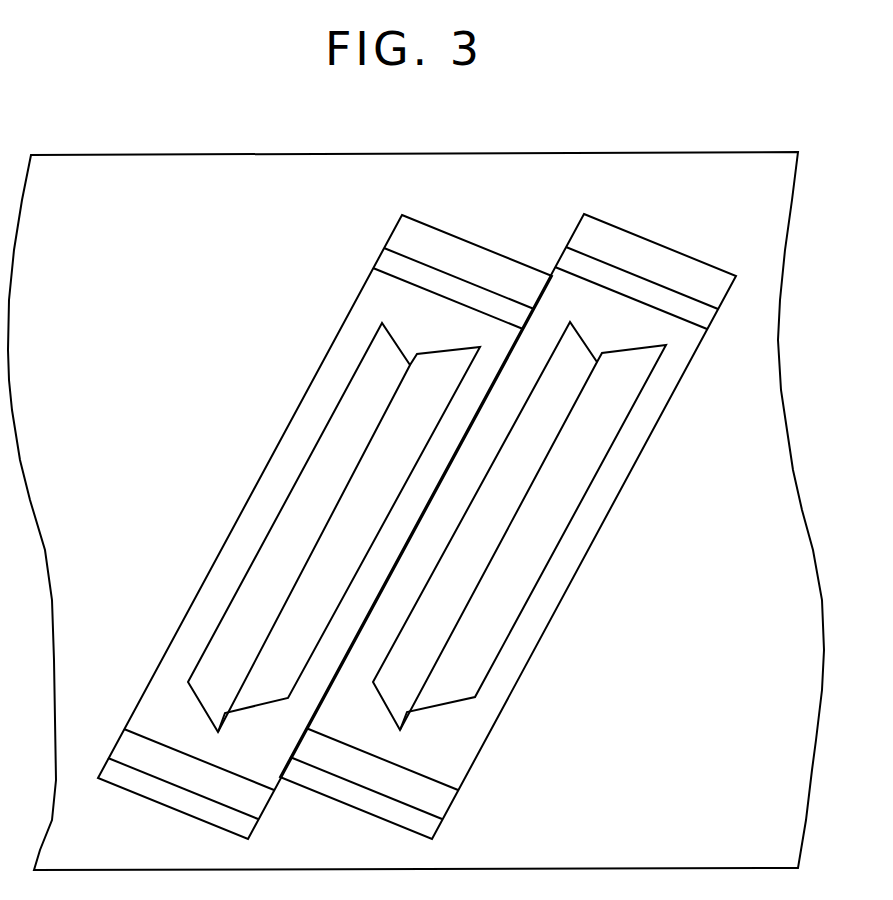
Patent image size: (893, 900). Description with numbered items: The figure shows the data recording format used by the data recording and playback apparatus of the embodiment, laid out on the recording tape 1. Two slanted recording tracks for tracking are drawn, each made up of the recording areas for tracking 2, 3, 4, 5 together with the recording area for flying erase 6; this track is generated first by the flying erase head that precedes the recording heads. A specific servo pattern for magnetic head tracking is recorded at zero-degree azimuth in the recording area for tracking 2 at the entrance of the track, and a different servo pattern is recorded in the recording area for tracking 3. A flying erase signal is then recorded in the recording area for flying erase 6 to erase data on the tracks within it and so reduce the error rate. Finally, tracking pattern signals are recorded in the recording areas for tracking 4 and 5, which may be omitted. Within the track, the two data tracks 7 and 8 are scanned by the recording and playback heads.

The recording tape 1 is at (162, 163).
The recording area for tracking 2 is at (112, 777).
The recording area for tracking 3 is at (130, 748).
The recording area for tracking 4 is at (388, 265).
The recording area for tracking 5 is at (398, 233).
The recording area for flying erase 6 is at (365, 308).
The data track 7 is at (288, 527).
The data track 8 is at (372, 460).